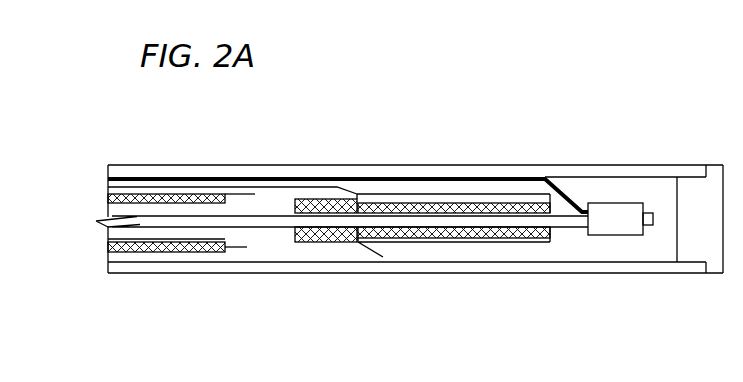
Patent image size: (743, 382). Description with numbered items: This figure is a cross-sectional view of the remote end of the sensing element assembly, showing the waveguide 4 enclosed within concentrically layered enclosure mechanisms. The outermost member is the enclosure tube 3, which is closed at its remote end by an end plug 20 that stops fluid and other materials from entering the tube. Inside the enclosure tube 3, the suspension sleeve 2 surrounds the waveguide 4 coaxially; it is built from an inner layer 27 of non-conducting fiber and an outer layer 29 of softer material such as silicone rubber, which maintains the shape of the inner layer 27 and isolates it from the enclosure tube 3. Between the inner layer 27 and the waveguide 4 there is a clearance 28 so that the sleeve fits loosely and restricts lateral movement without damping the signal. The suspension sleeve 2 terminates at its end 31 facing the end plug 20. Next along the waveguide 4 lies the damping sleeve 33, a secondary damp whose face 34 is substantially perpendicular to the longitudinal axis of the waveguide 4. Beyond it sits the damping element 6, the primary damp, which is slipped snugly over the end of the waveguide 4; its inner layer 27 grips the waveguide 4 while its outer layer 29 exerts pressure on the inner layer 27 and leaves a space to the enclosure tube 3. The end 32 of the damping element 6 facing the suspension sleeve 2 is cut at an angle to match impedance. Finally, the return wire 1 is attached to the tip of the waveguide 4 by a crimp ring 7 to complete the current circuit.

The return wire 1 is at (502, 178).
The suspension sleeve 2 is at (247, 247).
The enclosure tube 3 is at (185, 166).
The waveguide 4 is at (568, 226).
The damping element 6 is at (397, 194).
The crimp ring 7 is at (620, 212).
The end plug 20 is at (714, 165).
The inner layer 27 is at (180, 250).
The clearance 28 is at (150, 233).
The outer layer 29 is at (132, 193).
The end of suspension sleeve 31 is at (255, 194).
The end of damping element 32 is at (336, 178).
The damping sleeve 33 is at (312, 242).
The face of damping sleeve 34 is at (383, 257).